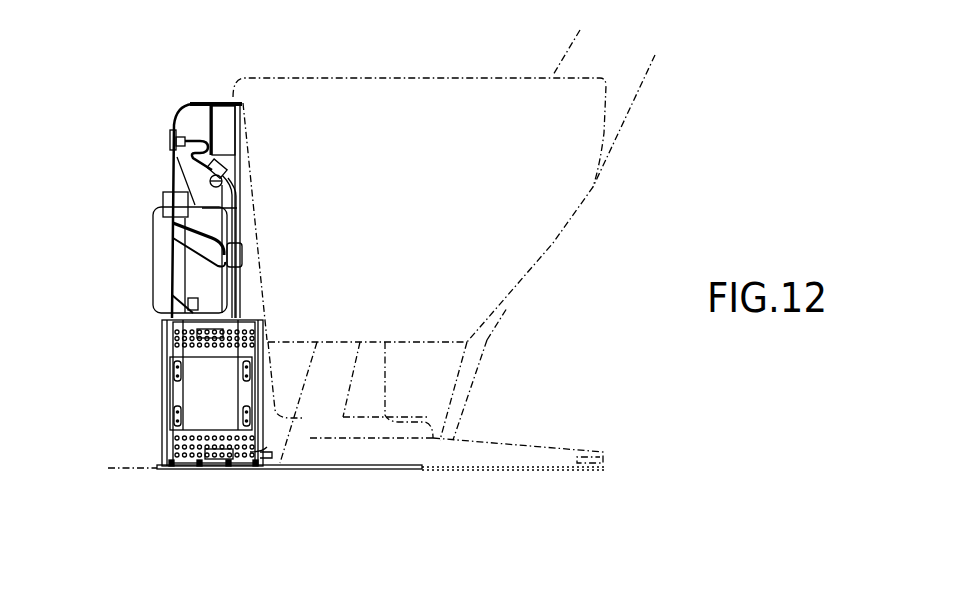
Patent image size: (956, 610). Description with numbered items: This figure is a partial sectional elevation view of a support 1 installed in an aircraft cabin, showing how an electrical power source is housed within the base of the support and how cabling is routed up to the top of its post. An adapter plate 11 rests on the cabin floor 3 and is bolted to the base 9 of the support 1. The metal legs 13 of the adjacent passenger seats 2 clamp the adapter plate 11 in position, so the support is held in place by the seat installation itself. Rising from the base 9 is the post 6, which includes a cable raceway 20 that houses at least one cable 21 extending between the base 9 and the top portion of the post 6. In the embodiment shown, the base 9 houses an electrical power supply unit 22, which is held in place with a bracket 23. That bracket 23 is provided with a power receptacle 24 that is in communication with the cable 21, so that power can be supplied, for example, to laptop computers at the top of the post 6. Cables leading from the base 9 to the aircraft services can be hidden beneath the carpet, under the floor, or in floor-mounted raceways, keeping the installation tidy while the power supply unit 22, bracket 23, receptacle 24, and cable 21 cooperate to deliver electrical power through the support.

The support 1 is at (148, 378).
The passenger seats 2 is at (553, 243).
The cabin floor 3 is at (115, 472).
The post 6 is at (240, 177).
The base 9 is at (263, 380).
The adapter plate 11 is at (333, 470).
The metal legs 13 is at (487, 443).
The cable raceway 20 is at (222, 248).
The cable 21 is at (205, 133).
The electrical power supply unit 22 is at (250, 327).
The bracket 23 is at (213, 393).
The power receptacle 24 is at (172, 140).